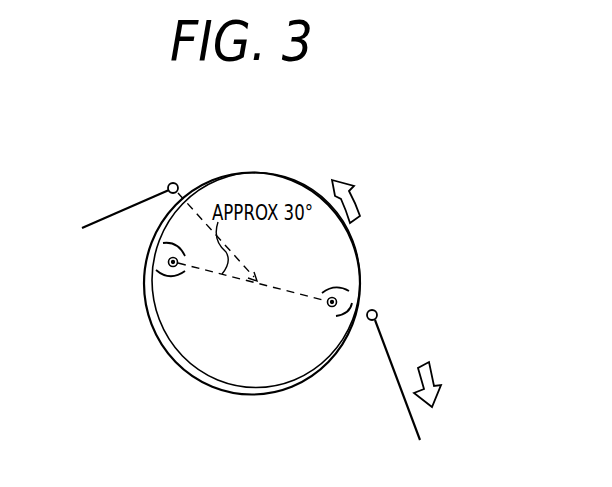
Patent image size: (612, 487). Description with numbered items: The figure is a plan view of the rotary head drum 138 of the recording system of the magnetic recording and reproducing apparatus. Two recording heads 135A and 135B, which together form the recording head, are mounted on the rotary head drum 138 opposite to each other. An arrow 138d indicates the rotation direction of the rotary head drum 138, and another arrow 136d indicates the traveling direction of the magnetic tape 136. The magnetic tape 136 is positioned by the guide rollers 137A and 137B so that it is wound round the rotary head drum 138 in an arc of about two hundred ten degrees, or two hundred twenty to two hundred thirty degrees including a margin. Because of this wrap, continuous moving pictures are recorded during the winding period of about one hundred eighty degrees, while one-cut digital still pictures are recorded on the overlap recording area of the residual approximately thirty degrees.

The recording head 135A is at (170, 278).
The recording head 135B is at (315, 318).
The magnetic tape 136 is at (118, 210).
The arrow indicating traveling direction of the magnetic tape 136d is at (434, 375).
The guide roller 137A is at (172, 183).
The guide roller 137B is at (373, 310).
The rotary head drum 138 is at (285, 178).
The arrow indicating rotation direction of the rotary head drum 138d is at (357, 197).